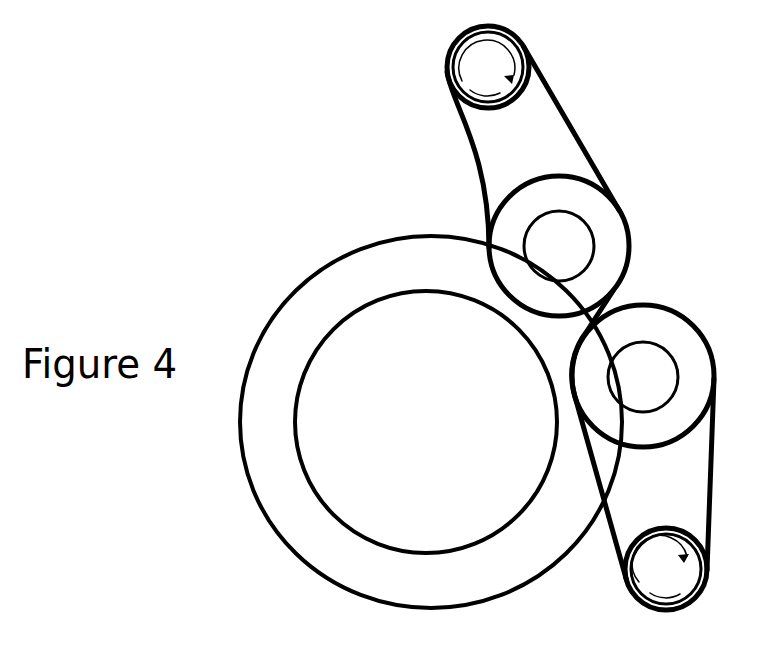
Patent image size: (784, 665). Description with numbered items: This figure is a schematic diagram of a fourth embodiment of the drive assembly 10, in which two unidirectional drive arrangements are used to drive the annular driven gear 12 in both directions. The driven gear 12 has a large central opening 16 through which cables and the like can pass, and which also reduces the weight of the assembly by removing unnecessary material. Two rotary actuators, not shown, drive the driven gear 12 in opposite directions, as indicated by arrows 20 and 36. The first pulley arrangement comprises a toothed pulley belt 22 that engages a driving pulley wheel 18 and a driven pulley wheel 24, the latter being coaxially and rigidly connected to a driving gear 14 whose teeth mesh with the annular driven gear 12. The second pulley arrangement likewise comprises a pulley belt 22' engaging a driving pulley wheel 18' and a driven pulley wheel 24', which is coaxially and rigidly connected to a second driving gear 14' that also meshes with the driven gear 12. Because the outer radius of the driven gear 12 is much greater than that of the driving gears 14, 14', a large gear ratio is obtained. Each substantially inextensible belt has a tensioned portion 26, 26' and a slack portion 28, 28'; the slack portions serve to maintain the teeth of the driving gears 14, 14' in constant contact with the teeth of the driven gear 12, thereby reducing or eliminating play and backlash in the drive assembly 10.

The drive assembly 10 is at (346, 170).
The driven gear 12 is at (421, 609).
The driving gear 14 is at (602, 240).
The driving gear 14' is at (691, 377).
The central opening 16 is at (430, 446).
The first toothed pulley wheel 18 is at (507, 56).
The driving pulley wheel 18' is at (690, 574).
The arrow 20 is at (496, 96).
The toothed pulley belt 22 is at (537, 137).
The pulley belt 22' is at (672, 450).
The second toothed pulley wheel 24 is at (589, 246).
The driven pulley wheel 24' is at (659, 368).
The tensioned portion 26 is at (579, 128).
The tensioned portion 26' is at (733, 475).
The slack portion 28 is at (464, 160).
The slack portion 28' is at (624, 435).
The arrow 36 is at (650, 597).